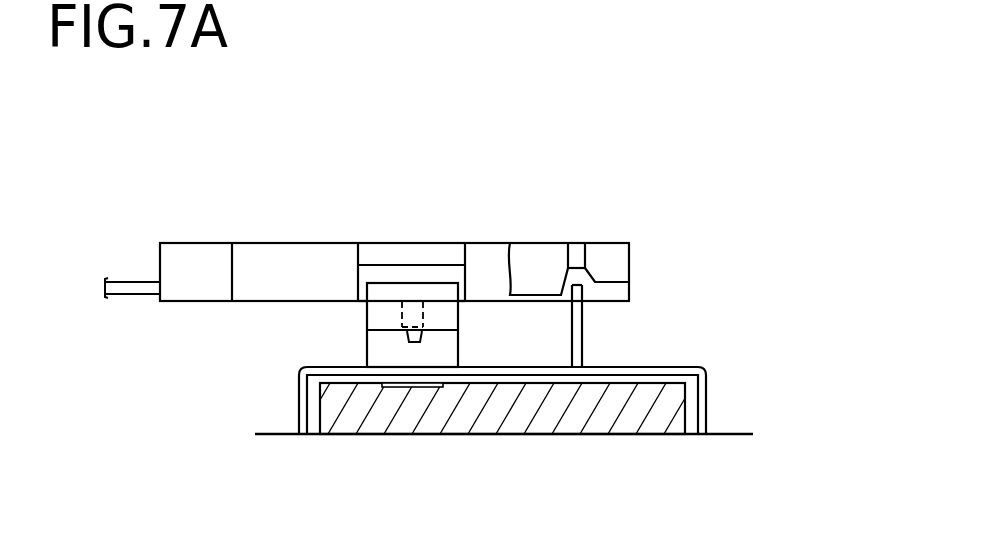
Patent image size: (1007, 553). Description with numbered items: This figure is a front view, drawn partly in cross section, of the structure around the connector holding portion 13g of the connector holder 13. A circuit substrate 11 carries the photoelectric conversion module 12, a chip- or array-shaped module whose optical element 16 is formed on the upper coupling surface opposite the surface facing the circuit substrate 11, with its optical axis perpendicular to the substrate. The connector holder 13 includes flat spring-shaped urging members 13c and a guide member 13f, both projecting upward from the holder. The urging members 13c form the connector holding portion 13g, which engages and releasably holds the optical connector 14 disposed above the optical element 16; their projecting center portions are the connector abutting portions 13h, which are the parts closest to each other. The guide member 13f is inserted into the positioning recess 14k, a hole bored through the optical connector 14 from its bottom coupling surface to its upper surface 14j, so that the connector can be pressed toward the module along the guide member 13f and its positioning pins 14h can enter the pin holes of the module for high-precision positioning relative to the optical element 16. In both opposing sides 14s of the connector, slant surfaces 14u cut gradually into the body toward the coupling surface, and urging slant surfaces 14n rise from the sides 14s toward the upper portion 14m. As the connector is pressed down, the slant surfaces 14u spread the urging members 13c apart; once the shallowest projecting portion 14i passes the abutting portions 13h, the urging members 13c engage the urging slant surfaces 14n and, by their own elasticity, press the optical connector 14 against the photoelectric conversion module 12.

The circuit substrate 11 is at (277, 433).
The photoelectric conversion module 12 is at (685, 405).
The connector holder 13 is at (724, 378).
The urging member 13c is at (447, 281).
The guide member 13f is at (582, 323).
The connector holding portion 13g is at (421, 264).
The connector abutting portion 13h is at (462, 317).
The optical connector 14 is at (200, 242).
The positioning pin 14h is at (420, 345).
The projecting portion 14i is at (383, 256).
The upper surface 14j is at (613, 243).
The positioning recess 14k is at (582, 256).
The upper portion 14m is at (402, 256).
The urging slant surface 14n is at (368, 250).
The side 14s is at (268, 260).
The slant surface 14u is at (372, 273).
The optical element 16 is at (400, 388).